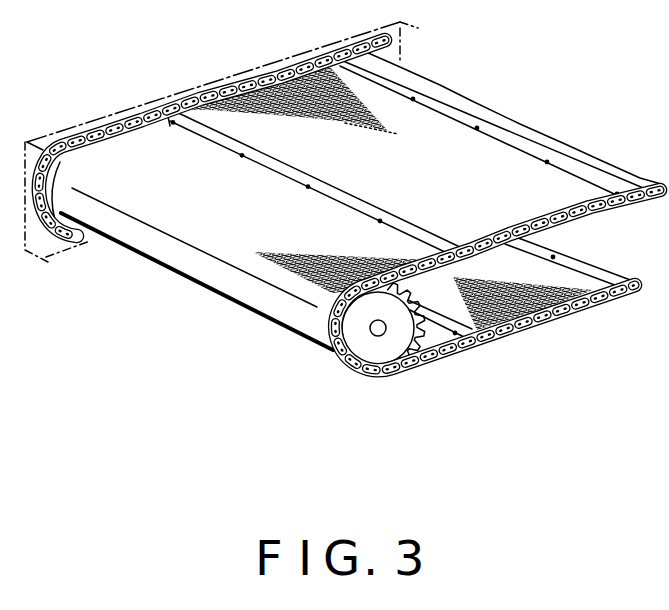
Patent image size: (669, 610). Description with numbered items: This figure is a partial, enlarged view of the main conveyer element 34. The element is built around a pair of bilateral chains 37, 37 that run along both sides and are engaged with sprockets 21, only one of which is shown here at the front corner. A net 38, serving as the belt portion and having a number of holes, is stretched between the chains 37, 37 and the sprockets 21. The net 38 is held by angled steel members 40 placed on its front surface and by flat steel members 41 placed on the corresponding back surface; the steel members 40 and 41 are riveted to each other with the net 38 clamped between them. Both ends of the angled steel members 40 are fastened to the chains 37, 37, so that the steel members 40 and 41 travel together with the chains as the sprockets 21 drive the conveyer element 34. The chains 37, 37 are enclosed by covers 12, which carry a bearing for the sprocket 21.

The cover 12 is at (106, 115).
The sprocket 21 is at (358, 346).
The main conveyer element 34 is at (152, 100).
The bilateral chains 37 is at (297, 63).
The net 38 is at (250, 83).
The angled steel members 40 is at (364, 198).
The flat steel members 41 is at (458, 349).